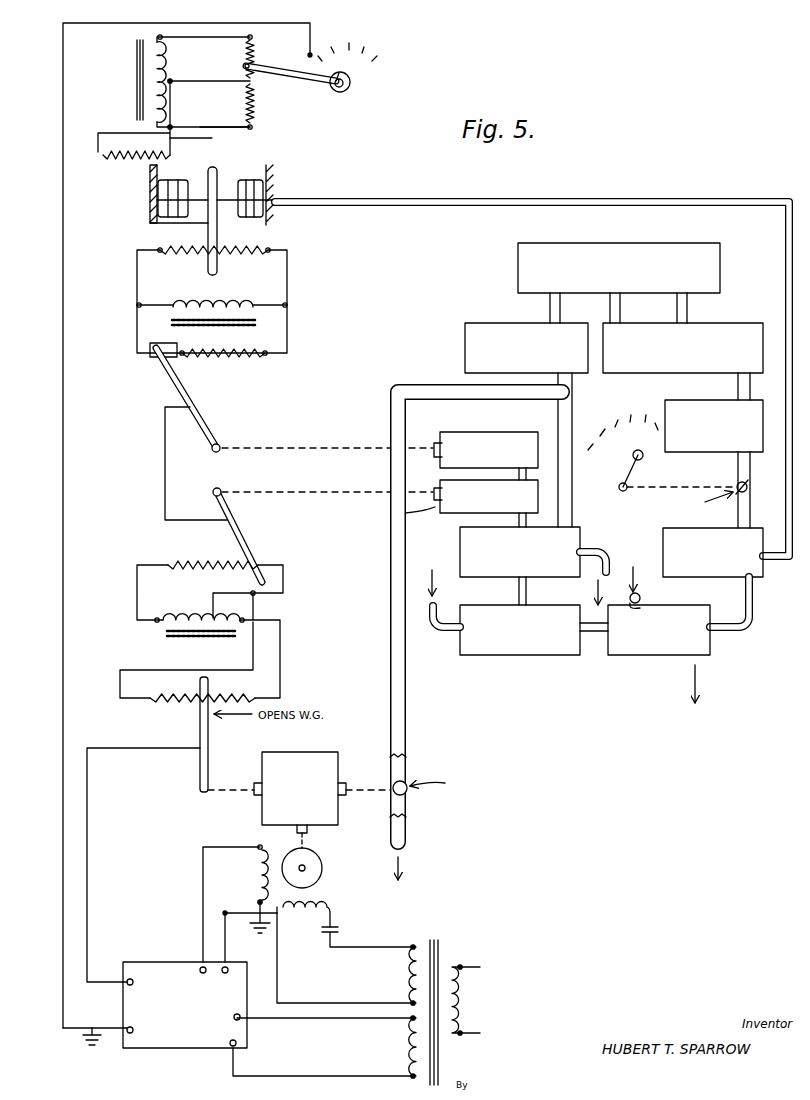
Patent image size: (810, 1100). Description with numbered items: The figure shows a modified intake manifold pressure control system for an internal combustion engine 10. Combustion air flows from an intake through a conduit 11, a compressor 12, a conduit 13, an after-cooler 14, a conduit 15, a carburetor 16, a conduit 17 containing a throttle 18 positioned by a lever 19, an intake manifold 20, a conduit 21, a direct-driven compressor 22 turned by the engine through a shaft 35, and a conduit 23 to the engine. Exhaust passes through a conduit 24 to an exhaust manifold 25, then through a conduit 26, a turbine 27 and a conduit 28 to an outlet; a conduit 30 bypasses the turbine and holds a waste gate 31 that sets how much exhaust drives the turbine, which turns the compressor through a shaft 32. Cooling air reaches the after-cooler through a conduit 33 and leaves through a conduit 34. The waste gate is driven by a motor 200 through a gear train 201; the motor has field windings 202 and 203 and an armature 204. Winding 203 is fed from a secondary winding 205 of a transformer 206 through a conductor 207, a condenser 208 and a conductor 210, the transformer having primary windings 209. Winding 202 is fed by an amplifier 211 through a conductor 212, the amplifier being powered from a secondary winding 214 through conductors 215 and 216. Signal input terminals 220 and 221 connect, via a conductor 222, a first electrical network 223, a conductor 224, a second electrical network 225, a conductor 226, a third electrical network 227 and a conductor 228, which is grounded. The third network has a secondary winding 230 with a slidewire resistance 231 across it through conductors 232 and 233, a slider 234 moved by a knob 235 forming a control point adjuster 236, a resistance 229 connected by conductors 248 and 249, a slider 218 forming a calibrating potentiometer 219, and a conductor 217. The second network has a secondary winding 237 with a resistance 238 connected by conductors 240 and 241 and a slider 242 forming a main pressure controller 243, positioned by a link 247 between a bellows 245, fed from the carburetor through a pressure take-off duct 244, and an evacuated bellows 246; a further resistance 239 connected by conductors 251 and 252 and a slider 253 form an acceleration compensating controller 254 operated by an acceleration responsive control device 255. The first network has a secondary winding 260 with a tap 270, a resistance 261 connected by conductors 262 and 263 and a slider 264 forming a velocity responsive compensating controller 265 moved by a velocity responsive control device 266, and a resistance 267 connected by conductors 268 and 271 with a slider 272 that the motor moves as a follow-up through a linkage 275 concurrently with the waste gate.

The internal combustion engine 10 is at (720, 268).
The conduit 11 is at (433, 640).
The compressor 12 is at (510, 656).
The conduit 13 is at (598, 634).
The after-cooler 14 is at (710, 648).
The conduit 15 is at (754, 606).
The carburetor 16 is at (750, 568).
The conduit 17 is at (751, 512).
The throttle 18 is at (734, 484).
The lever 19 is at (620, 478).
The intake manifold 20 is at (672, 402).
The conduit 21 is at (738, 392).
The direct-driven compressor 22 is at (742, 324).
The conduit 23 is at (689, 308).
The conduit 24 is at (548, 310).
The exhaust manifold 25 is at (465, 348).
The conduit 26 is at (575, 416).
The turbine 27 is at (468, 572).
The conduit 28 is at (592, 552).
The conduit 30 is at (406, 702).
The waste gate 31 is at (410, 794).
The shaft 32 is at (517, 594).
The conduit 33 is at (641, 596).
The conduit 34 is at (698, 658).
The shaft 35 is at (622, 310).
The motor 200 is at (325, 860).
The gear train 201 is at (338, 812).
The field winding 202 is at (177, 350).
The field winding 203 is at (303, 921).
The armature 204 is at (323, 887).
The secondary winding 205 is at (409, 981).
The transformer 206 is at (452, 953).
The conductor 207 is at (395, 947).
The condenser 208 is at (337, 927).
The primary winding 209 is at (461, 996).
The conductor 210 is at (278, 969).
The amplifier 211 is at (160, 960).
The conductor 212 is at (203, 890).
The secondary winding 214 is at (408, 1053).
The conductor 215 is at (237, 911).
The conductor 216 is at (314, 1076).
The conductor 217 is at (202, 80).
The slider 218 is at (143, 162).
The calibrating potentiometer 219 is at (122, 170).
The signal input terminal 220 is at (133, 982).
The signal input terminal 221 is at (133, 1030).
The conductor 222 is at (87, 855).
The first electrical network 223 is at (128, 615).
The conductor 224 is at (165, 467).
The second electrical network 225 is at (128, 304).
The conductor 226 is at (148, 213).
The third electrical network 227 is at (132, 90).
The conductor 228 is at (63, 414).
The resistance 229 is at (110, 157).
The transformer secondary winding 230 is at (170, 82).
The slidewire resistance 231 is at (247, 101).
The conductor 232 is at (204, 40).
The conductor 233 is at (200, 127).
The slider 234 is at (288, 66).
The knob 235 is at (342, 93).
The control point adjuster 236 is at (368, 82).
The secondary winding 237 is at (208, 305).
The slidewire resistance 238 is at (188, 256).
The resistor 239 is at (212, 357).
The conductor 240 is at (137, 263).
The conductor 241 is at (287, 278).
The slider 242 is at (218, 267).
The main pressure controller 243 is at (282, 244).
The pressure take-off duct 244 is at (731, 207).
The bellows 245 is at (248, 180).
The bellows 246 is at (177, 180).
The link 247 is at (219, 218).
The conductor 248 is at (113, 133).
The conductor 249 is at (204, 140).
The conductor 251 is at (137, 335).
The conductor 252 is at (287, 333).
The slider 253 is at (170, 379).
The acceleration compensating controller 254 is at (227, 389).
The acceleration responsive control device 255 is at (468, 432).
The transformer secondary winding 260 is at (190, 607).
The slidewire resistance 261 is at (197, 565).
The conductor 262 is at (137, 585).
The conductor 263 is at (283, 588).
The slider 264 is at (245, 540).
The velocity responsive compensating controller 265 is at (278, 565).
The velocity responsive control device 266 is at (392, 513).
The slidewire resistance 267 is at (172, 703).
The conductor 268 is at (168, 670).
The tap 270 is at (214, 614).
The conductor 271 is at (280, 657).
The slider 272 is at (210, 733).
The motor linkage 275 is at (277, 731).